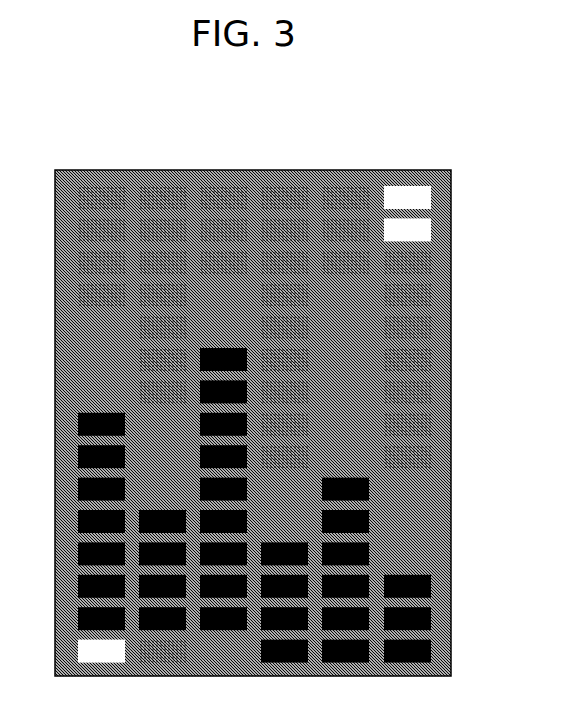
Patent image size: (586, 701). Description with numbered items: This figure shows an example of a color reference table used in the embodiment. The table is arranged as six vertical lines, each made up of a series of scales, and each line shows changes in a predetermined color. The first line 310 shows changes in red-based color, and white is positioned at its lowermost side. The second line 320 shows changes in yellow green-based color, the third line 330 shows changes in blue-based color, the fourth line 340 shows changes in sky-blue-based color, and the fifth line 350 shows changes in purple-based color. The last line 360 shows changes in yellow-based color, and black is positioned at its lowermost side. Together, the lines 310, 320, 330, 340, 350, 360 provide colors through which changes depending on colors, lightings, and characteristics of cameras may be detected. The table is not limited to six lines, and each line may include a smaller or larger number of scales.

The first line 310 is at (95, 186).
The second line 320 is at (155, 186).
The third line 330 is at (215, 186).
The fourth line 340 is at (275, 186).
The fifth line 350 is at (335, 186).
The last line 360 is at (396, 186).